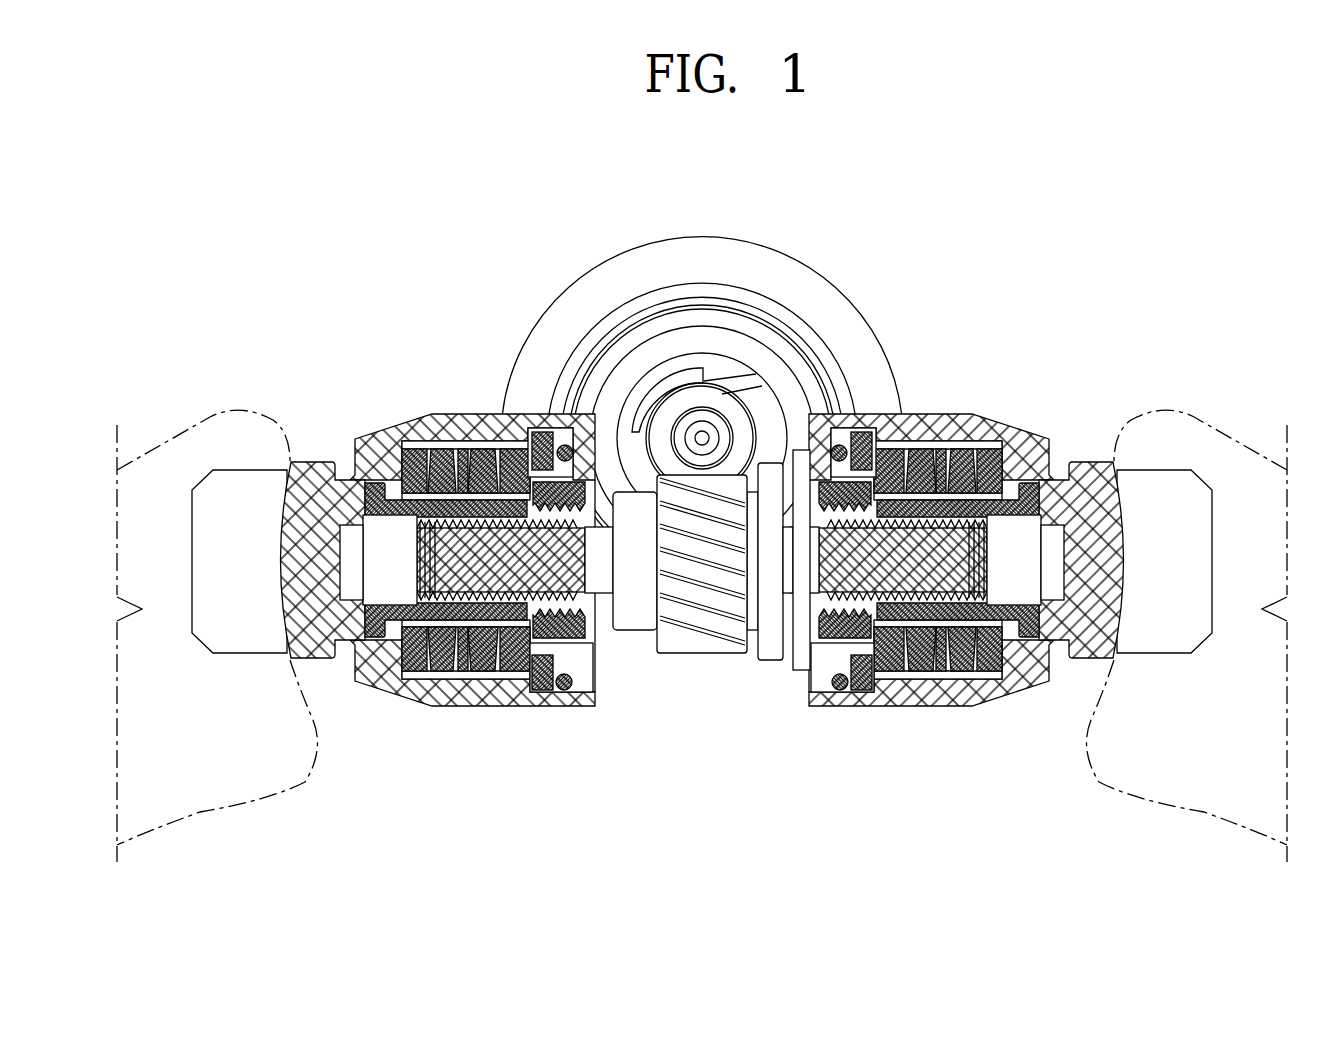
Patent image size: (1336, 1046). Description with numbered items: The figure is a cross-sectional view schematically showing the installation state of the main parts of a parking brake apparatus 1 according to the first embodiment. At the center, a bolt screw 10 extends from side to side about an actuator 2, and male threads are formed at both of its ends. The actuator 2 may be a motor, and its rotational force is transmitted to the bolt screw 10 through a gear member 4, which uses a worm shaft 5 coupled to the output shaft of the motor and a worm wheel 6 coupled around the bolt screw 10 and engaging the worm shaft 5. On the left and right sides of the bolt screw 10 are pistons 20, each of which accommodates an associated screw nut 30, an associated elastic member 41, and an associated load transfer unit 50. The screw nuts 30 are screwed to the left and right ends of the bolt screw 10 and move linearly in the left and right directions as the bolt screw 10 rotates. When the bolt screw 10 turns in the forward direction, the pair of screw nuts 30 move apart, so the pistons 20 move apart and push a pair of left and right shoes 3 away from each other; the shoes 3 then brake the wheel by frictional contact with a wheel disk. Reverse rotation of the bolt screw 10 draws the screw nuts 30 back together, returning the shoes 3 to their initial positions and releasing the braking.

The parking brake apparatus 1 is at (995, 412).
The actuator 2 is at (718, 262).
The shoes 3 is at (220, 413).
The gear member 4 is at (803, 212).
The worm shaft 5 is at (718, 398).
The worm wheel 6 is at (730, 462).
The bolt screw 10 is at (925, 593).
The pistons 20 is at (447, 695).
The screw nuts 30 is at (497, 680).
The elastic members 41 is at (474, 455).
The load transfer units 50 is at (375, 507).